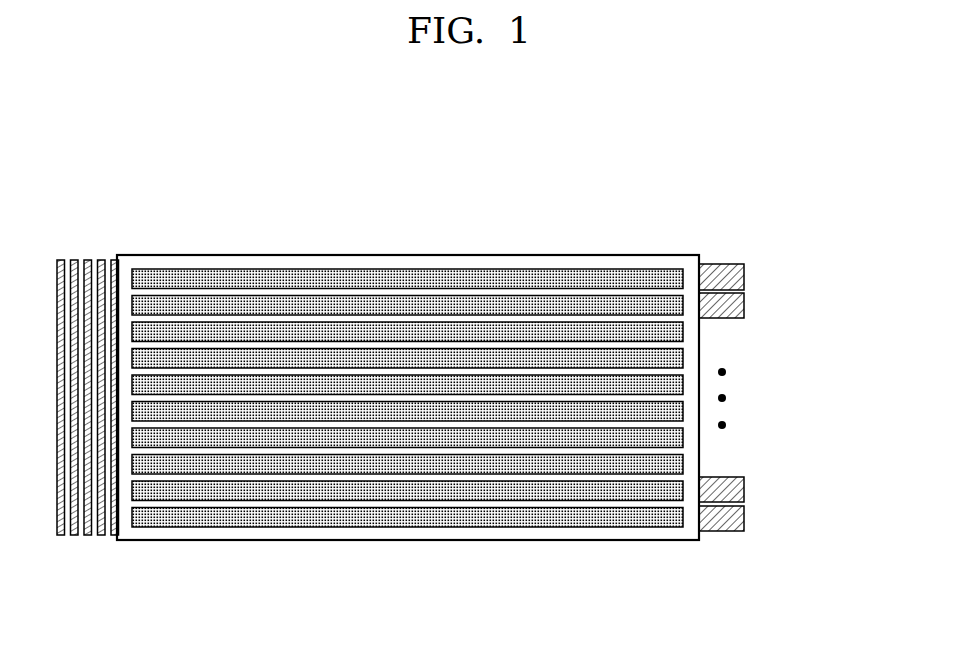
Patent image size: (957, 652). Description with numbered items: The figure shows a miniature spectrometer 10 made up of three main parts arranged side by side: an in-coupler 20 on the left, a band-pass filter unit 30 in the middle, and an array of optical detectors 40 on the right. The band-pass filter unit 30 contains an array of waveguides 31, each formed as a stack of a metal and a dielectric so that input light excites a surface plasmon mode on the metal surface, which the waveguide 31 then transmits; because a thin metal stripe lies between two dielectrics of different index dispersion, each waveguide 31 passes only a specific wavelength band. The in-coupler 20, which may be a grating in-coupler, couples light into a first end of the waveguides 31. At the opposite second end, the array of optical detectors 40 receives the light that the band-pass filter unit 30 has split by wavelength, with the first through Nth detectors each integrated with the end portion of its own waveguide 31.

The miniature spectrometer 10 is at (427, 189).
The in-coupler 20 is at (85, 550).
The band-pass filter unit 30 is at (485, 258).
The waveguide 31 is at (617, 305).
The array of optical detectors 40 is at (848, 265).